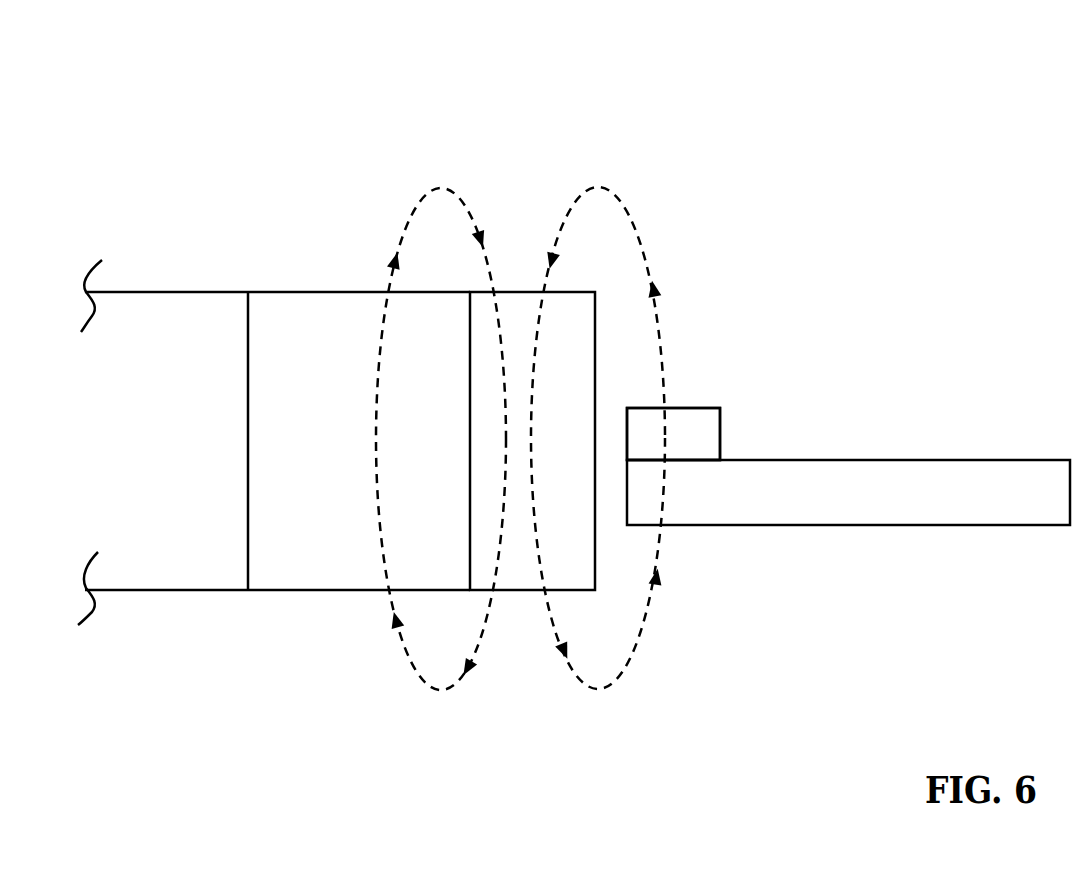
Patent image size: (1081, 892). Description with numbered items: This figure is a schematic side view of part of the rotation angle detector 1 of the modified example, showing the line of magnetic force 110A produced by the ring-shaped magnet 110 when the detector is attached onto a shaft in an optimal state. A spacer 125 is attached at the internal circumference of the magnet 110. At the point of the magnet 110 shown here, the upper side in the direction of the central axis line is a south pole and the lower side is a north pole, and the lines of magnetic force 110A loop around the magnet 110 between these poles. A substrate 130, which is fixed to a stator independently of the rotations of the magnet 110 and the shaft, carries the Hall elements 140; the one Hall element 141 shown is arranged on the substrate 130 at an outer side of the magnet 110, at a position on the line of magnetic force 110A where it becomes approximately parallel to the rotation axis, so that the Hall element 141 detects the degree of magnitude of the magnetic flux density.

The rotation angle detector 1 is at (698, 143).
The magnet 110 is at (598, 573).
The line of magnetic force 110A is at (408, 697).
The spacer 125 is at (283, 590).
The substrate 130 is at (853, 525).
The Hall elements 140 is at (673, 434).
The Hall element 141 is at (795, 380).